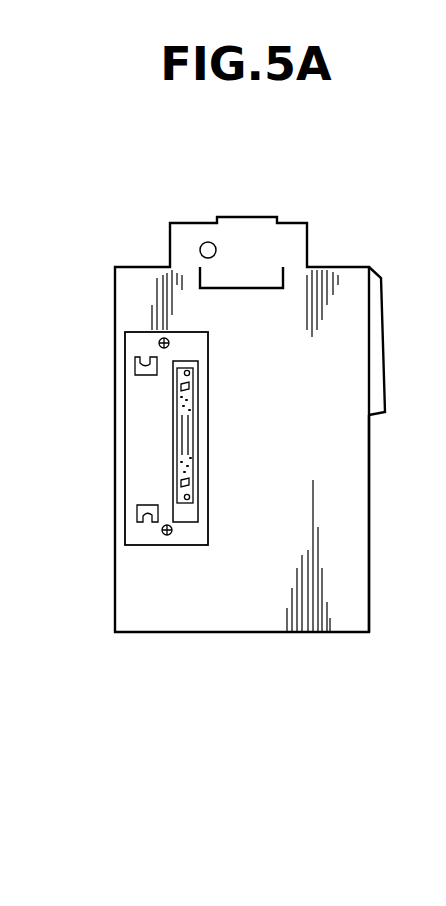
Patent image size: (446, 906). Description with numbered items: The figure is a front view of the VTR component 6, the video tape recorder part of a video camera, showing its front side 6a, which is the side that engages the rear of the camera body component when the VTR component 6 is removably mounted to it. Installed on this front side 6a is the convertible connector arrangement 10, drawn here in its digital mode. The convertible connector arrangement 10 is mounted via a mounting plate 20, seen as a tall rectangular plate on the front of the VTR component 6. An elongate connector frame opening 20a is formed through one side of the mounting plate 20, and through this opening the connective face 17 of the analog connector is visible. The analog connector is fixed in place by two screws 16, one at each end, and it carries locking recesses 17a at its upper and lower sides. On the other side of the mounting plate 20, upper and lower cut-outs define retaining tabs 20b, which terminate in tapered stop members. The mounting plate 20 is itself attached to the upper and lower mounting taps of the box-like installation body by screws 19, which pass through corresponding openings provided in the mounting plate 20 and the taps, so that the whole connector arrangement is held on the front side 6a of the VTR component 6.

The VTR component 6 is at (353, 268).
The front side of VTR component 6a is at (338, 470).
The convertible connector arrangement 10 is at (169, 555).
The screws 16 is at (190, 374).
The connective face 17 is at (193, 447).
The locking recesses 17a is at (190, 389).
The screw 19 is at (158, 343).
The mounting plate 20 is at (124, 438).
The connector frame opening 20a is at (200, 512).
The retaining tabs 20b is at (134, 372).